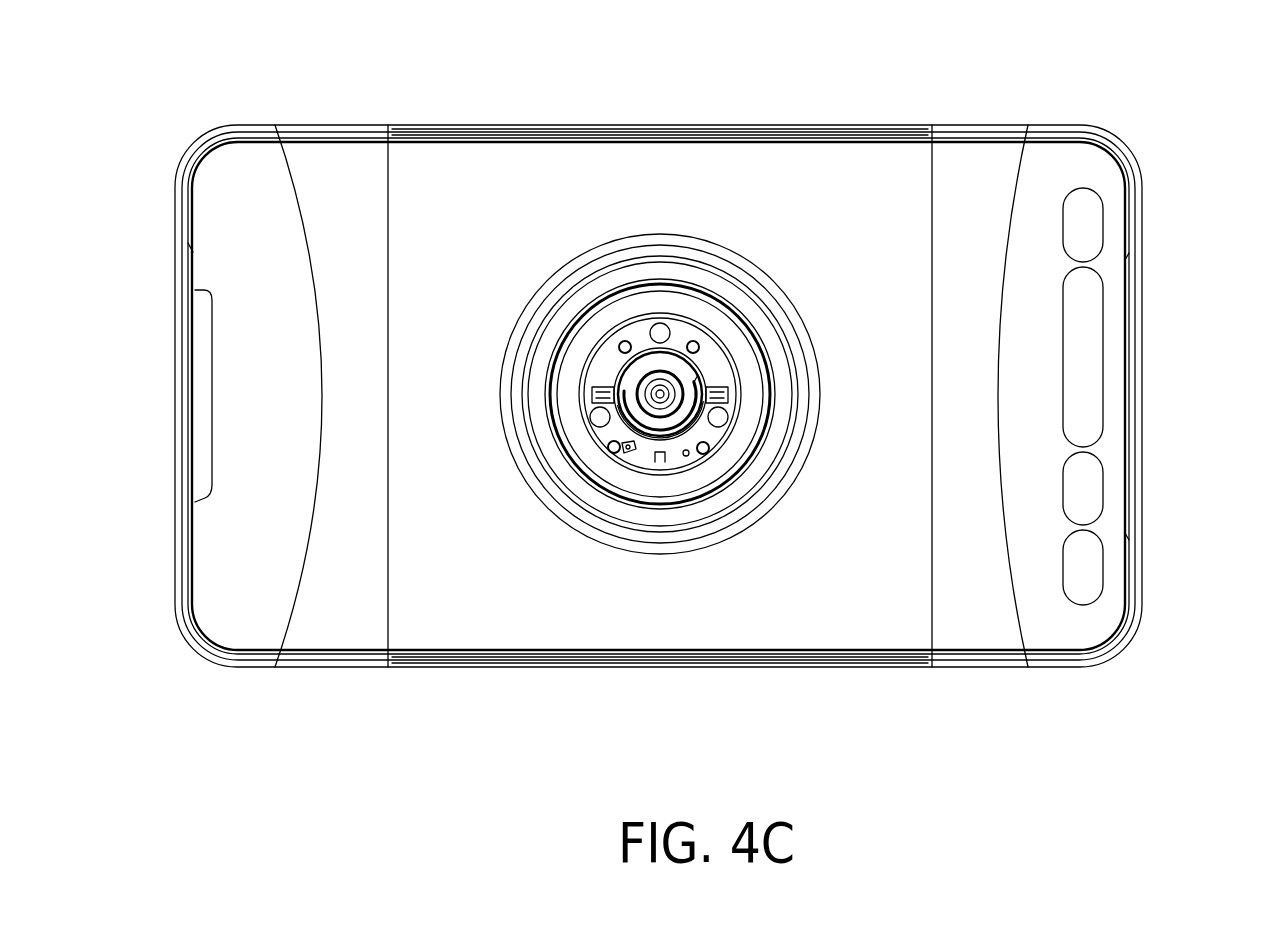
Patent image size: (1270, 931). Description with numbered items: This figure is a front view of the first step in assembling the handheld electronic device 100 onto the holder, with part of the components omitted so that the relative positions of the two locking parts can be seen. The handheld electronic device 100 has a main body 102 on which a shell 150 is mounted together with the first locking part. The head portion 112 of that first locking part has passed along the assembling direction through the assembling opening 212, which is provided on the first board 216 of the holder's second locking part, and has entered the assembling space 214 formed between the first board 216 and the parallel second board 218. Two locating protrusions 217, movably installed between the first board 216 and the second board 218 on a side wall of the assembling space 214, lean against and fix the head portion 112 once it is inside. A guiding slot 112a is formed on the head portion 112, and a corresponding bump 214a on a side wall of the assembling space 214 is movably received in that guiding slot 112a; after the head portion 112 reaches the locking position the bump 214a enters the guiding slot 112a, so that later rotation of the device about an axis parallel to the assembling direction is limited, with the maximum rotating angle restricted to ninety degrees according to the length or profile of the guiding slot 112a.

The handheld electronic device 100 is at (1166, 112).
The main body 102 is at (1048, 162).
The shell 150 is at (840, 165).
The head portion 112 is at (655, 362).
The second board 218 is at (711, 363).
The locating protrusions 217 is at (600, 377).
The assembling opening 212 is at (613, 399).
The assembling space 214 is at (620, 450).
The first board 216 is at (643, 450).
The bump 214a is at (658, 462).
The guiding slot 112a is at (673, 433).